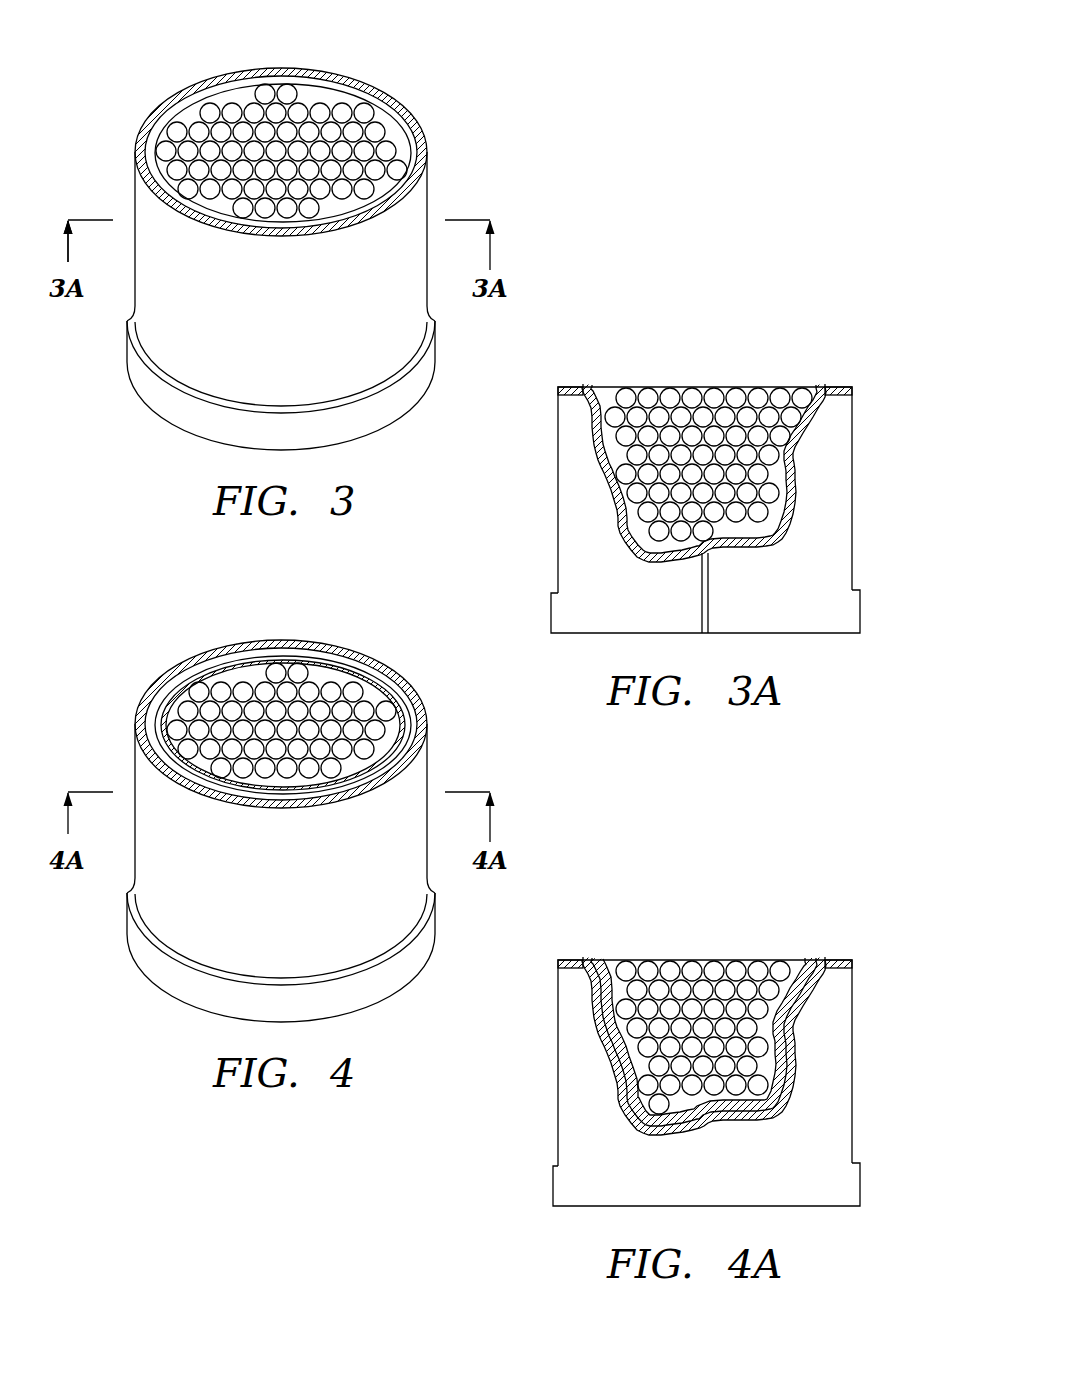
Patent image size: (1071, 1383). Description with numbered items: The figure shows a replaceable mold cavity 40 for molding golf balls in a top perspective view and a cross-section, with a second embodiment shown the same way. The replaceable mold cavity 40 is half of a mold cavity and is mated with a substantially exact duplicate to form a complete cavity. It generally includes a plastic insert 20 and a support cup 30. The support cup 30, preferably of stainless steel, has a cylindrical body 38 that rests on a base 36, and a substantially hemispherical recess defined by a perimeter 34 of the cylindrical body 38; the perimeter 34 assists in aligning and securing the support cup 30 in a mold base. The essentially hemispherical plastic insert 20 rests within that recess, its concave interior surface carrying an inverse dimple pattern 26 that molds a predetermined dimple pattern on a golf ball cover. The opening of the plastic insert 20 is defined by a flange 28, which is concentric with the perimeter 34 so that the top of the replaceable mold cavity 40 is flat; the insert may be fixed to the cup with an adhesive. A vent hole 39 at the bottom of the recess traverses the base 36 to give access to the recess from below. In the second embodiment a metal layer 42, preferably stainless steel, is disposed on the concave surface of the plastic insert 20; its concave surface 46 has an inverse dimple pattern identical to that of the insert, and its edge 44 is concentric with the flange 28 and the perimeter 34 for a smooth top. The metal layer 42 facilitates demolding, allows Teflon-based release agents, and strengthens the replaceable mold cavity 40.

In FIG. 3, the plastic insert 20 is at (188, 82).
In FIG. 3A, the plastic insert 20 is at (789, 382).
In FIG. 4, the plastic insert 20 is at (241, 693).
In FIG. 4A, the plastic insert 20 is at (706, 1005).
In FIG. 3, the inverse dimple pattern 26 is at (265, 93).
In FIG. 3A, the inverse dimple pattern 26 is at (757, 393).
In FIG. 3, the flange 28 is at (402, 130).
In FIG. 3A, the flange 28 is at (583, 387).
In FIG. 4, the flange 28 is at (288, 703).
In FIG. 4A, the flange 28 is at (704, 1009).
In FIG. 3, the support cup 30 is at (438, 190).
In FIG. 3A, the support cup 30 is at (520, 508).
In FIG. 4, the support cup 30 is at (287, 863).
In FIG. 4A, the support cup 30 is at (641, 1083).
In FIG. 3, the perimeter 34 is at (140, 143).
In FIG. 3A, the perimeter 34 is at (572, 387).
In FIG. 4, the perimeter 34 is at (241, 724).
In FIG. 4A, the perimeter 34 is at (701, 921).
In FIG. 3, the base 36 is at (163, 393).
In FIG. 3A, the base 36 is at (552, 610).
In FIG. 4, the base 36 is at (259, 957).
In FIG. 4A, the base 36 is at (660, 1184).
In FIG. 3, the cylindrical body 38 is at (157, 332).
In FIG. 3A, the cylindrical body 38 is at (580, 568).
In FIG. 4, the cylindrical body 38 is at (239, 854).
In FIG. 4A, the cylindrical body 38 is at (666, 1063).
In FIG. 3A, the vent hole 39 is at (710, 580).
In FIG. 3, the replaceable mold cavity 40 is at (115, 90).
In FIG. 3A, the replaceable mold cavity 40 is at (782, 330).
In FIG. 4, the replaceable mold cavity 40 is at (287, 800).
In FIG. 4A, the replaceable mold cavity 40 is at (642, 1017).
In FIG. 4, the metal layer 42 is at (283, 684).
In FIG. 4A, the metal layer 42 is at (704, 1016).
In FIG. 4, the edge 44 is at (283, 685).
In FIG. 4, the concave surface 46 is at (281, 678).
In FIG. 4A, the concave surface 46 is at (703, 1005).